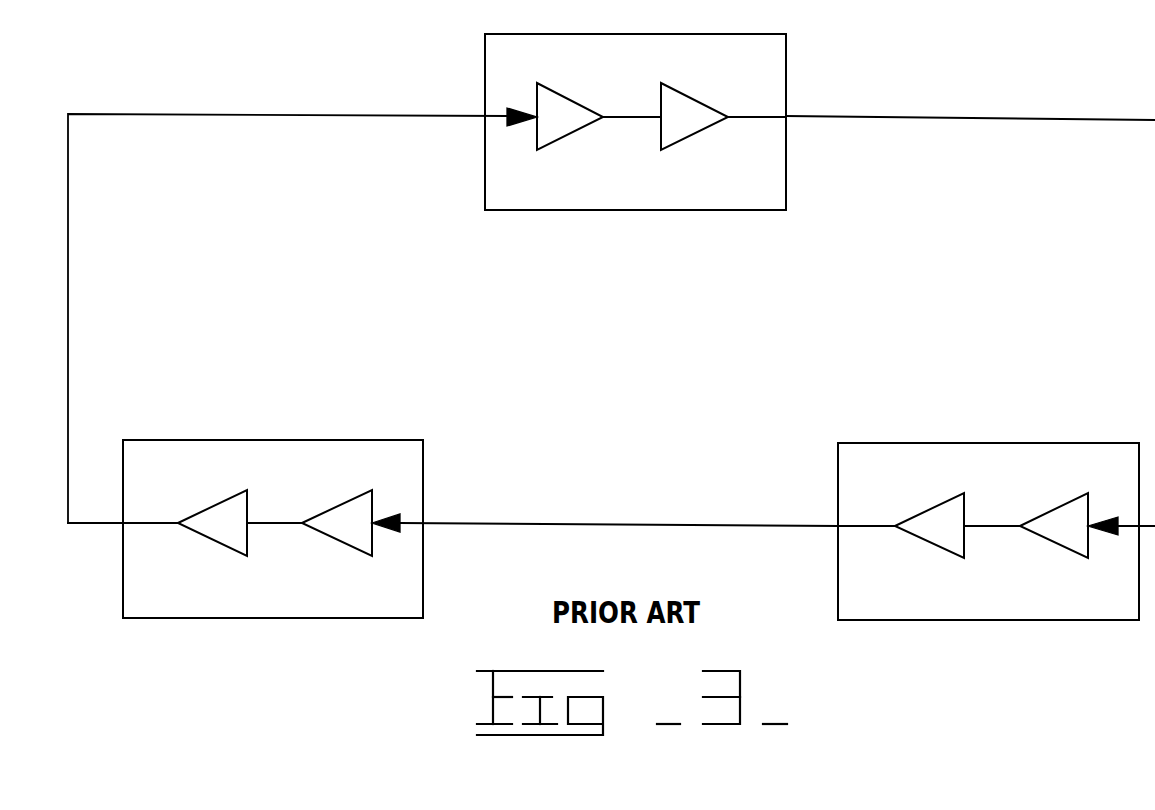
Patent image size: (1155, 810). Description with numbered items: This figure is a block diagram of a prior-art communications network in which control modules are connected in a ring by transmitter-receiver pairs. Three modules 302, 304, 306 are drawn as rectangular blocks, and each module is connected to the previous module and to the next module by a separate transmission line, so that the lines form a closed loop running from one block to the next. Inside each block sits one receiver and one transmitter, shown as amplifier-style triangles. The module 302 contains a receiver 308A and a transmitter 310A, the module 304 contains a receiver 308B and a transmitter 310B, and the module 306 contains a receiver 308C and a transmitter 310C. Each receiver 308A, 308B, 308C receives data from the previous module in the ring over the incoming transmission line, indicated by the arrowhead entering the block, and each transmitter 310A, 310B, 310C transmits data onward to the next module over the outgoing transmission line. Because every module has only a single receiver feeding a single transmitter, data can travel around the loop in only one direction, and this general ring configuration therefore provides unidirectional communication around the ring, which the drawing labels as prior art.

The module 302 is at (277, 491).
The module 304 is at (988, 492).
The module 306 is at (635, 160).
The receiver 308A is at (328, 537).
The receiver 308B is at (1048, 540).
The receiver 308C is at (578, 133).
The transmitter 310A is at (203, 537).
The transmitter 310B is at (923, 540).
The transmitter 310C is at (698, 144).